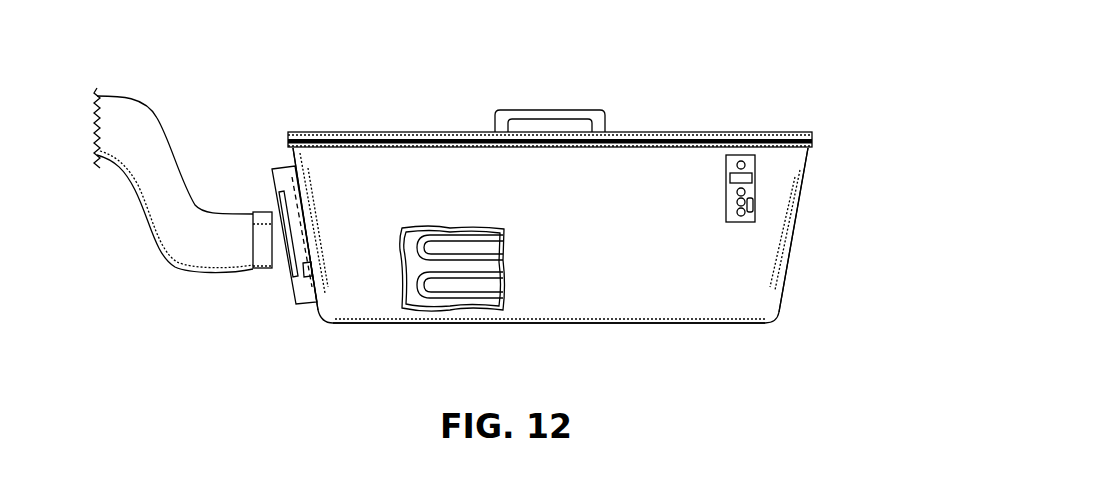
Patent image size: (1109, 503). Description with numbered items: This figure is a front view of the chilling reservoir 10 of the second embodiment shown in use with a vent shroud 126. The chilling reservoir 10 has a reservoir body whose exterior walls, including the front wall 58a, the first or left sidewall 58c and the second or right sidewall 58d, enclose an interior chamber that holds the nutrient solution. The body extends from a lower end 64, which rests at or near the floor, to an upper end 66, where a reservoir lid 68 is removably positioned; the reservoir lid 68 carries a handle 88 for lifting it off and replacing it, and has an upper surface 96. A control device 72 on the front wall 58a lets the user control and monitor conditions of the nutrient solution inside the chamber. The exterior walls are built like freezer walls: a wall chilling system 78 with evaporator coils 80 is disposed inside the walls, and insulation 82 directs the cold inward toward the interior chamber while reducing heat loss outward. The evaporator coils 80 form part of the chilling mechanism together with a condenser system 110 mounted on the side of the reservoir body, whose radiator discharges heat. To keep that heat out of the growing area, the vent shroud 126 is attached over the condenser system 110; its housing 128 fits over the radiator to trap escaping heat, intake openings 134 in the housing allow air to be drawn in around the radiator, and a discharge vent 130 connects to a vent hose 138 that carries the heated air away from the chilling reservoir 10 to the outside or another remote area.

The chilling reservoir 10 is at (549, 200).
The front wall 58a is at (581, 235).
The first or left sidewall 58c is at (316, 313).
The second or right sidewall 58d is at (792, 263).
The lower end 64 is at (792, 323).
The upper end 66 is at (593, 105).
The reservoir lid 68 is at (327, 134).
The control device 72 is at (760, 197).
The wall chilling system 78 is at (468, 303).
The evaporator coils 80 is at (495, 300).
The insulation 82 is at (428, 313).
The handle 88 is at (590, 112).
The upper surface 96 is at (761, 129).
The condenser system 110 is at (258, 225).
The vent shroud 126 is at (260, 238).
The housing 128 is at (299, 301).
The discharge vent 130 is at (263, 217).
The intake openings 134 is at (288, 251).
The vent hose 138 is at (152, 203).